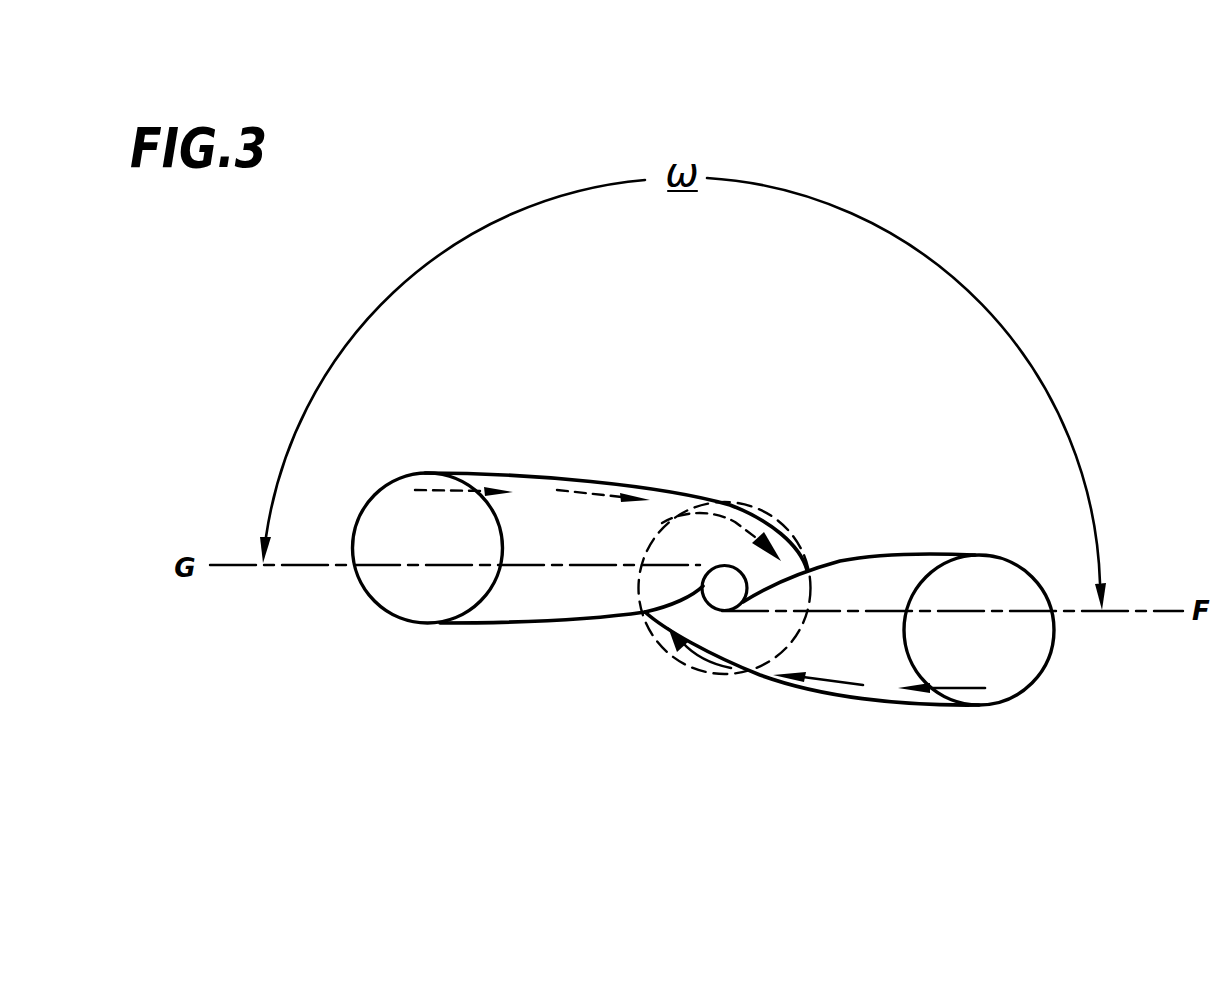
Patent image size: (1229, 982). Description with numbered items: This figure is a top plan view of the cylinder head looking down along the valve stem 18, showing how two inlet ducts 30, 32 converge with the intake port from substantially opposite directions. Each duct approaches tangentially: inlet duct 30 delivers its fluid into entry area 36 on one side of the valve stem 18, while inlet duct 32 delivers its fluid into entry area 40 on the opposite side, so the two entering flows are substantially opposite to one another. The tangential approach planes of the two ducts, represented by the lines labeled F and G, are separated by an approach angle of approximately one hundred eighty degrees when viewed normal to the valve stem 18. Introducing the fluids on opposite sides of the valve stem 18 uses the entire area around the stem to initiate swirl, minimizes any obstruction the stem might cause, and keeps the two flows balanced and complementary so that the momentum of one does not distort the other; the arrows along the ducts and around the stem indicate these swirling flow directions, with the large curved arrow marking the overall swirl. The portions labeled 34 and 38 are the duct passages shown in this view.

The valve stem 18 is at (733, 578).
The inlet duct 30 is at (898, 706).
The inlet duct 32 is at (473, 624).
The first band portion 34 is at (827, 682).
The entry area 36 is at (749, 652).
The second band portion 38 is at (573, 495).
The entry area 40 is at (738, 557).